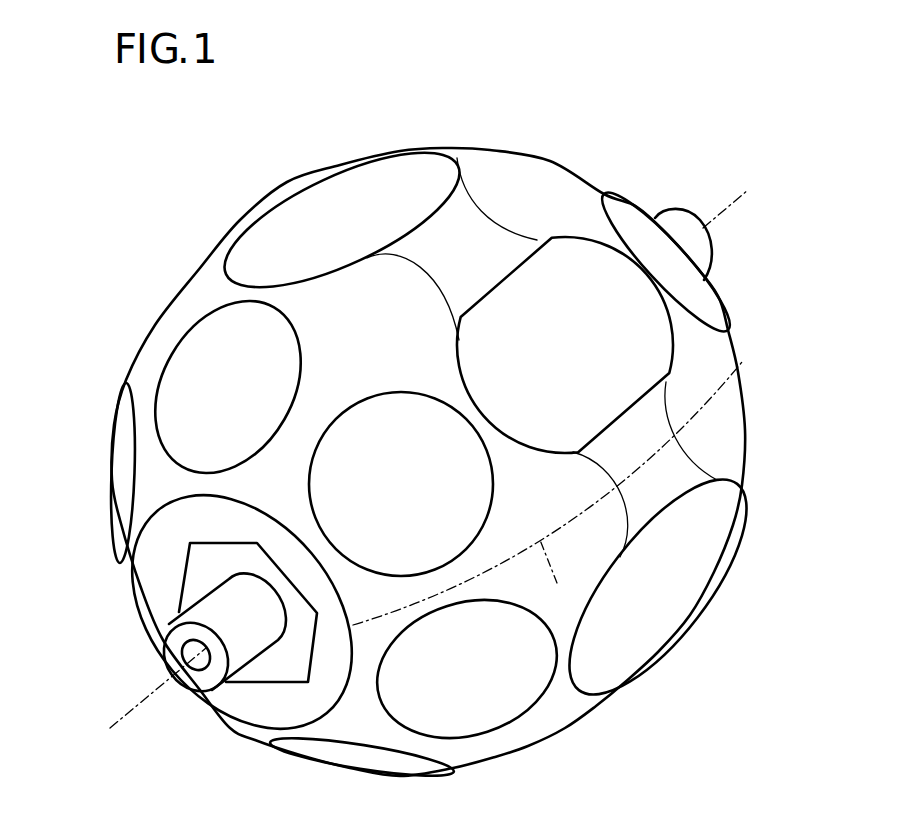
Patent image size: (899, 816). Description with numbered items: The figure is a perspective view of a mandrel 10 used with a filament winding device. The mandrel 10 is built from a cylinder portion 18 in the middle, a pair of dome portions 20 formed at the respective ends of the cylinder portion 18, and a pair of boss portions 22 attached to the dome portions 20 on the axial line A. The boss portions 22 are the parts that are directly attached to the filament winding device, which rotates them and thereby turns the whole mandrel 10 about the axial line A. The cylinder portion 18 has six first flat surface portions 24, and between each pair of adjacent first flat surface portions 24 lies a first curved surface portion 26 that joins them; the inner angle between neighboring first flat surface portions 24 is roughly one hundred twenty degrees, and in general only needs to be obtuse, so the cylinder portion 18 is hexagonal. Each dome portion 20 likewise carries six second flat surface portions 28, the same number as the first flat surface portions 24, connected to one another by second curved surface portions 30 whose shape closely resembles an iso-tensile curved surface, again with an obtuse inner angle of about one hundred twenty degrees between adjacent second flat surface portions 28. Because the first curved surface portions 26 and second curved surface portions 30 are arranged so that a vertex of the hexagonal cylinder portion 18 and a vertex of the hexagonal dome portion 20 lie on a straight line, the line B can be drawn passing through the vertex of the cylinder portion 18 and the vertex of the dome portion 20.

The mandrel 10 is at (184, 128).
The cylinder portion 18 is at (382, 147).
The dome portion 20 is at (527, 152).
The boss portion 22 is at (200, 677).
The first flat surface portion 24 is at (343, 205).
The first curved surface portion 26 is at (462, 225).
The second flat surface portion 28 is at (202, 355).
The second curved surface portion 30 is at (560, 185).
The axial line A is at (148, 699).
The line B is at (550, 407).